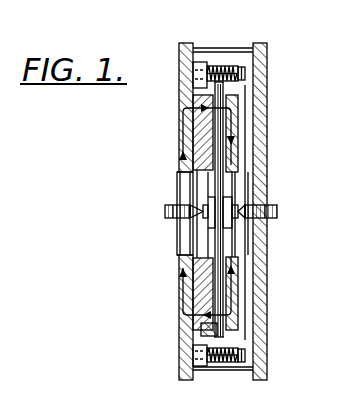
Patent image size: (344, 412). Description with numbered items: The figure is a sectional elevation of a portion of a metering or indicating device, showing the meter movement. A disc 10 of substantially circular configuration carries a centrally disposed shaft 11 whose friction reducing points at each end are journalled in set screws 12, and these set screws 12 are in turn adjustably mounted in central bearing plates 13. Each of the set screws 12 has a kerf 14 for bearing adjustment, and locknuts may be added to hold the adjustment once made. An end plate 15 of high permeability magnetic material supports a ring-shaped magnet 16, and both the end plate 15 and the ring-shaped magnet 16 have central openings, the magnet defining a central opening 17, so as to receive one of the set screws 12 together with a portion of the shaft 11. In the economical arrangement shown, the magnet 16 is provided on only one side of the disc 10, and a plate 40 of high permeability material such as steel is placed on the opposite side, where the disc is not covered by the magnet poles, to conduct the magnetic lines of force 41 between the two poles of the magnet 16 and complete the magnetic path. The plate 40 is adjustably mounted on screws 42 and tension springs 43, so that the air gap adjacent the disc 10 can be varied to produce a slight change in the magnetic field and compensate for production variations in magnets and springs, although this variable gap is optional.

The disc 10 is at (262, 120).
The shaft 11 is at (243, 195).
The set screws 12 is at (183, 235).
The central bearing plates 13 is at (175, 182).
The kerf 14 is at (253, 218).
The end plate 15 is at (185, 295).
The ring-shaped magnet 16 is at (192, 142).
The central opening 17 is at (236, 152).
The plate 40 is at (233, 334).
The magnetic lines of force 41 is at (233, 300).
The screws 42 is at (242, 70).
The tension springs 43 is at (209, 76).